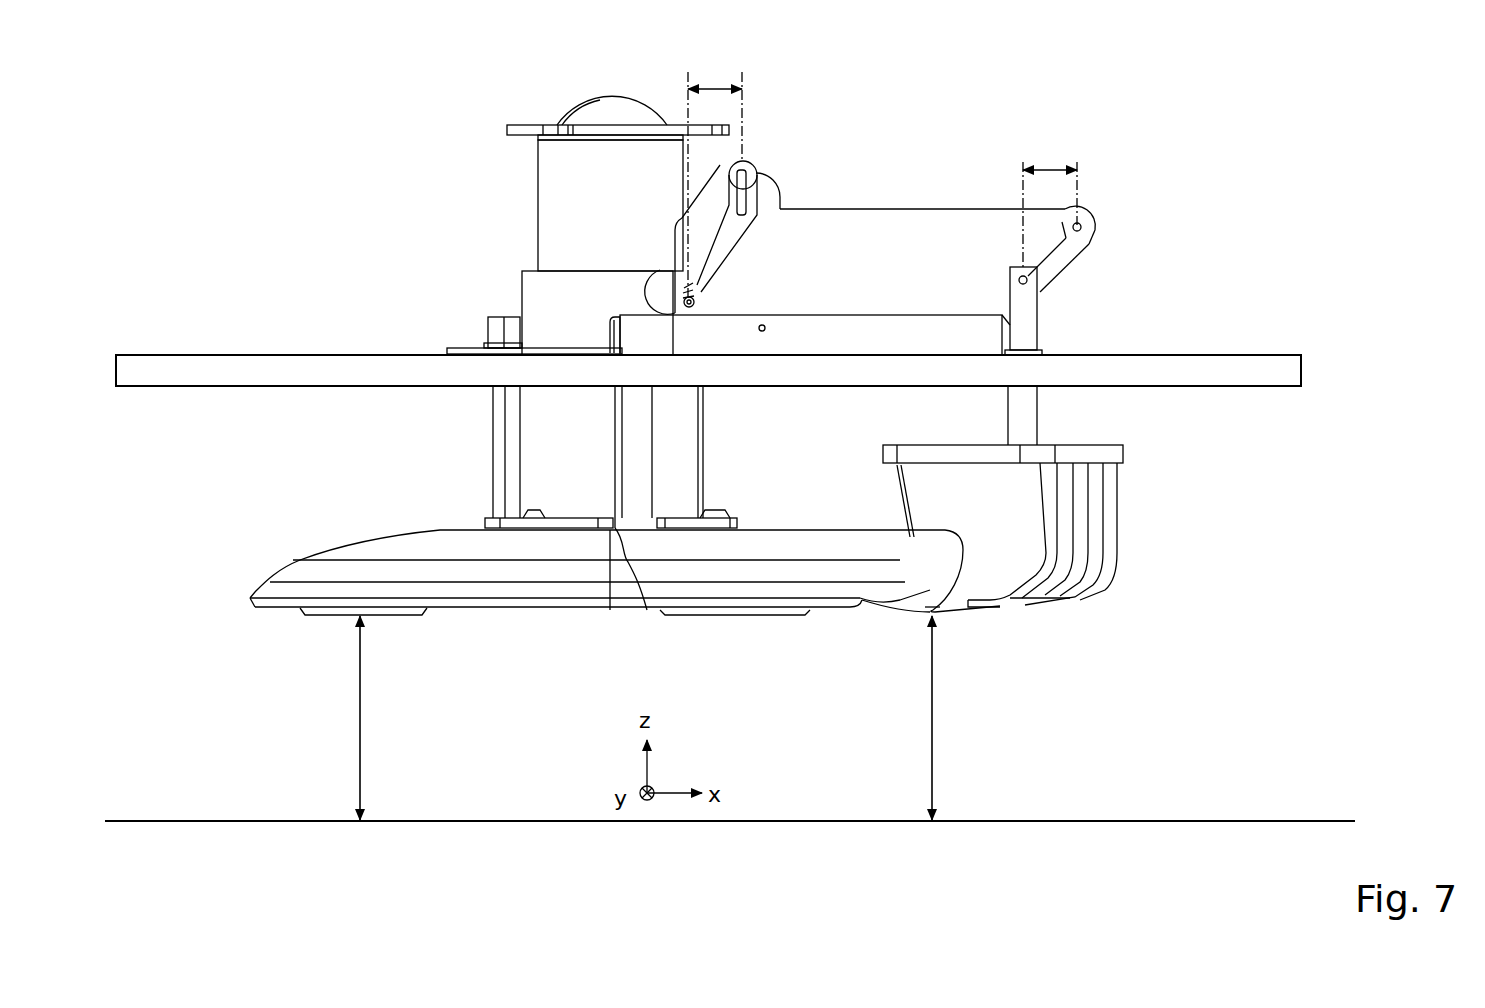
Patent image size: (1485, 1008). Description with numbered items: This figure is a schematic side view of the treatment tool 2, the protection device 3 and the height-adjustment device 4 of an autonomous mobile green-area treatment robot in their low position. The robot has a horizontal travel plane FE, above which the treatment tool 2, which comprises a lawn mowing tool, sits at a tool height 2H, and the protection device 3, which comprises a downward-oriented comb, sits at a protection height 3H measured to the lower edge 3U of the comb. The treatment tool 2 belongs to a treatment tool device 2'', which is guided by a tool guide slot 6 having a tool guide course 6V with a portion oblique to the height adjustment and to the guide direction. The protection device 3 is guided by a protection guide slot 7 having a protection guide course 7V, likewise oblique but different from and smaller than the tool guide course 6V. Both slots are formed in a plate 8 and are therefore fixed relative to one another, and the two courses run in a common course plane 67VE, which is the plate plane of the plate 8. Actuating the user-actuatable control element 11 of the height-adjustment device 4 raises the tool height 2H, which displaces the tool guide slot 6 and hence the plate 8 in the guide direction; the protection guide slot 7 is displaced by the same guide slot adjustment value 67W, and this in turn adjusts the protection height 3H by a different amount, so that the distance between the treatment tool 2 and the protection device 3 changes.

The control element 11 is at (612, 102).
The guide slot adjustment value 67W is at (717, 90).
The height-adjustment device 4 is at (438, 212).
The tool guide slot 6 is at (745, 173).
The tool guide course 6V is at (743, 200).
The plate 8 is at (875, 223).
The course plane 67VE is at (927, 227).
The protection guide slot 7 is at (1070, 227).
The protection guide course 7V is at (1050, 253).
The treatment tool device 2'' is at (566, 457).
The treatment tool 2 is at (597, 617).
The protection device 3 is at (940, 610).
The lower edge 3U is at (927, 608).
The tool height 2H is at (358, 723).
The protection height 3H is at (932, 735).
The travel plane FE is at (1322, 820).